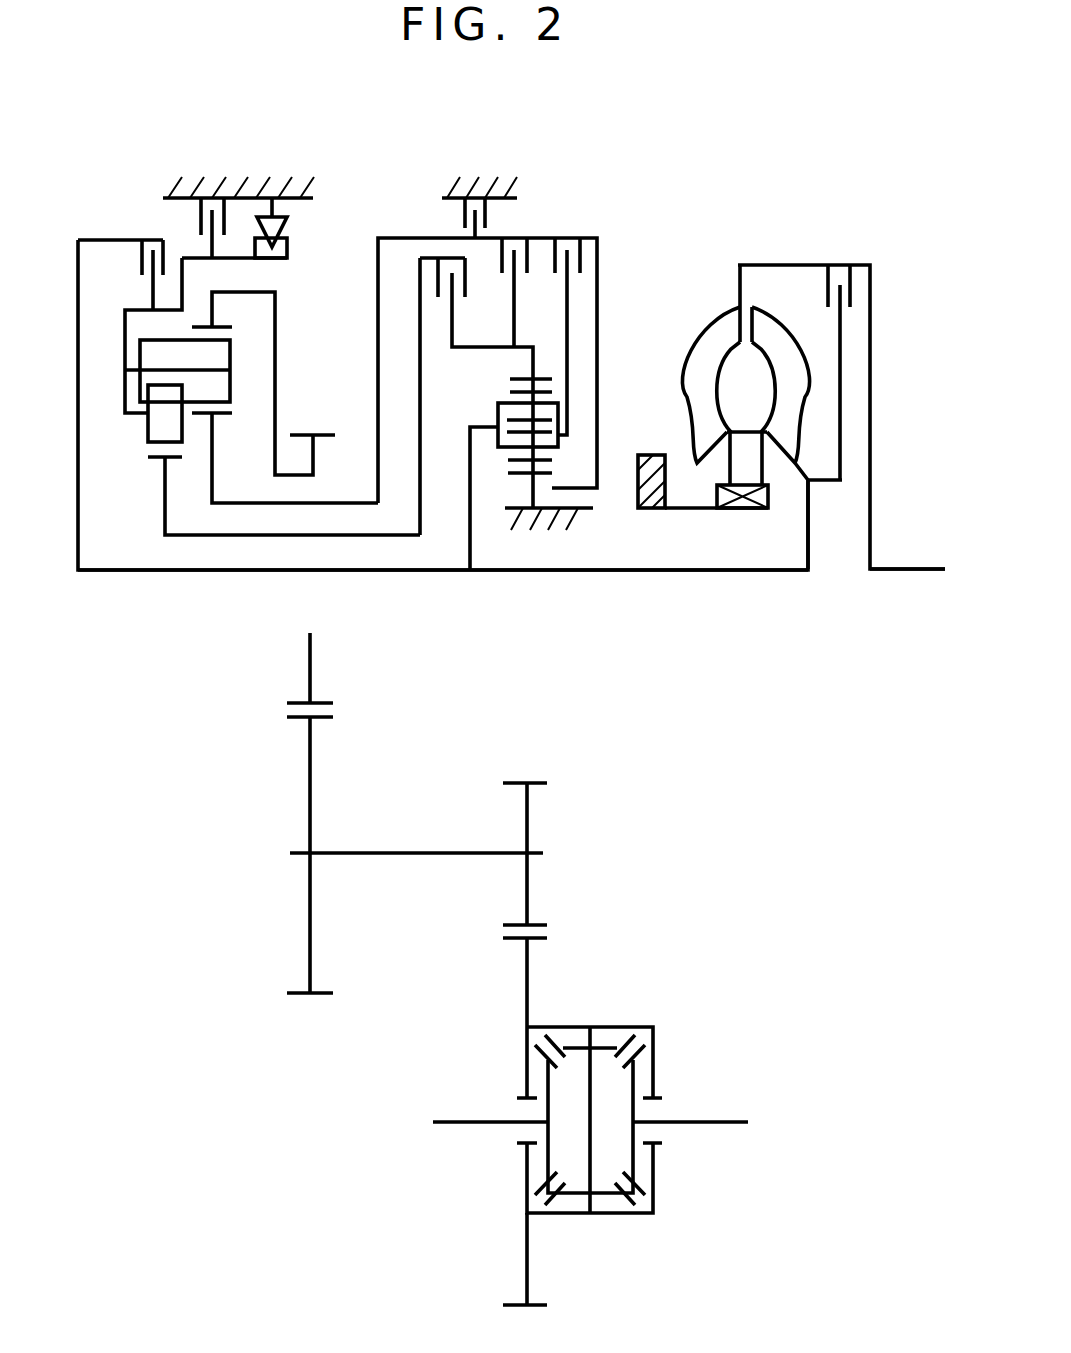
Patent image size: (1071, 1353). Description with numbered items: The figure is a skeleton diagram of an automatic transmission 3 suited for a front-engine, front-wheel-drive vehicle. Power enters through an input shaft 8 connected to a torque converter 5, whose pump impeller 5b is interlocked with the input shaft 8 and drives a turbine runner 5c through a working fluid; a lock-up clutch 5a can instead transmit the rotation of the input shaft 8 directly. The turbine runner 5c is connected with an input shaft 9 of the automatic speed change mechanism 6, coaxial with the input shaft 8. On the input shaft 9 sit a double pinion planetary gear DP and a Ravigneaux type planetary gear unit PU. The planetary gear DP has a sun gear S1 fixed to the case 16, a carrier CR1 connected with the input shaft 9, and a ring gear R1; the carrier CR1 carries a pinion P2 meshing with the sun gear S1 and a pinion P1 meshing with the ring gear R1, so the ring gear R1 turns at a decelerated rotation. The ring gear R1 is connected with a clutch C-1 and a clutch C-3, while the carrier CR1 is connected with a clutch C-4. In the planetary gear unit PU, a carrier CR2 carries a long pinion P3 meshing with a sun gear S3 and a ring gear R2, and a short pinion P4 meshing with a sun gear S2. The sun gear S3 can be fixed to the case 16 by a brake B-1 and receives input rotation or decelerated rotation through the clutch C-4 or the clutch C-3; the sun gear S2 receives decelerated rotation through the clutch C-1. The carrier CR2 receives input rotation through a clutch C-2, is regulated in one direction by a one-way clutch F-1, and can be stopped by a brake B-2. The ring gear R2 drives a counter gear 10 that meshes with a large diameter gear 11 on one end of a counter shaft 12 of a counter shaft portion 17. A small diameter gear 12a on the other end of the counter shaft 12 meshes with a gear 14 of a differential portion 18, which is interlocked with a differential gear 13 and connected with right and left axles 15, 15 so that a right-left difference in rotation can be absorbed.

The automatic transmission 3 is at (667, 157).
The torque converter 5 is at (760, 250).
The lock-up clutch 5a is at (848, 297).
The pump impeller 5b is at (698, 367).
The turbine runner 5c is at (765, 327).
The automatic speed change mechanism 6 is at (381, 172).
The input shaft 8 is at (888, 569).
The input shaft 9 is at (578, 571).
The counter gear 10 is at (312, 435).
The large diameter gear 11 is at (312, 757).
The counter shaft 12 is at (410, 855).
The small diameter gear 12a is at (530, 808).
The differential gear 13 is at (620, 1214).
The gear 14 is at (530, 972).
The axles 15 is at (458, 1124).
The case 16 is at (168, 196).
The counter shaft portion 17 is at (283, 816).
The differential portion 18 is at (698, 1010).
The planetary gear unit PU is at (110, 332).
The planetary gear DP is at (565, 362).
The carrier CR1 is at (560, 437).
The carrier CR2 is at (124, 327).
The ring gear R1 is at (517, 379).
The ring gear R2 is at (225, 326).
The sun gear S1 is at (512, 474).
The sun gear S2 is at (160, 458).
The sun gear S3 is at (214, 415).
The pinion P1 is at (517, 391).
The pinion P2 is at (511, 460).
The long pinion P3 is at (231, 358).
The short pinion P4 is at (146, 428).
The clutch C-1 is at (485, 383).
The clutch C-2 is at (147, 262).
The clutch C-3 is at (509, 280).
The clutch C-4 is at (565, 324).
The brake B-1 is at (477, 195).
The brake B-2 is at (207, 206).
The one-way clutch F-1 is at (268, 206).